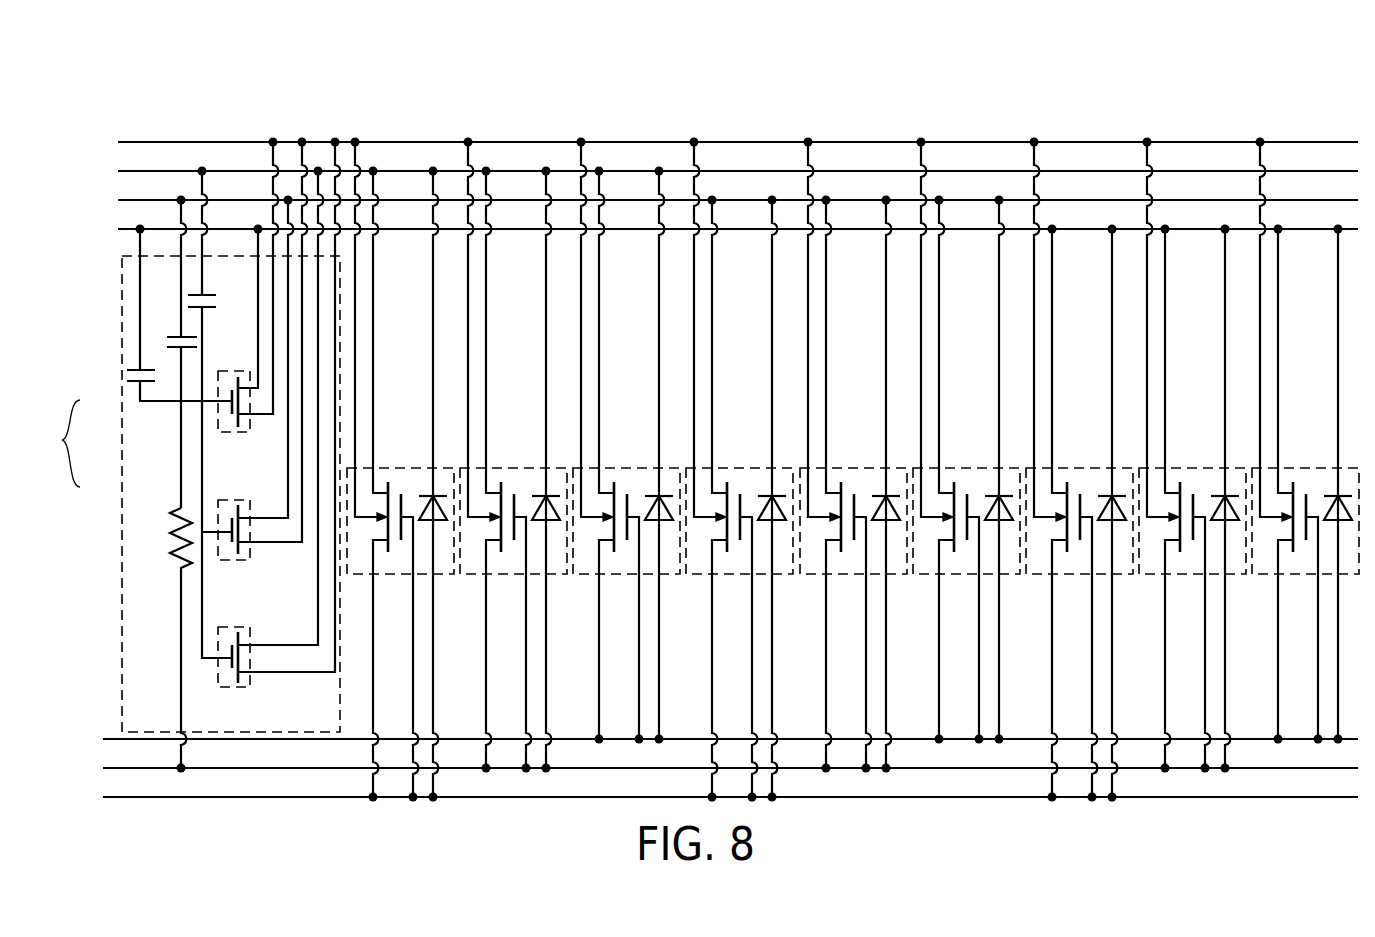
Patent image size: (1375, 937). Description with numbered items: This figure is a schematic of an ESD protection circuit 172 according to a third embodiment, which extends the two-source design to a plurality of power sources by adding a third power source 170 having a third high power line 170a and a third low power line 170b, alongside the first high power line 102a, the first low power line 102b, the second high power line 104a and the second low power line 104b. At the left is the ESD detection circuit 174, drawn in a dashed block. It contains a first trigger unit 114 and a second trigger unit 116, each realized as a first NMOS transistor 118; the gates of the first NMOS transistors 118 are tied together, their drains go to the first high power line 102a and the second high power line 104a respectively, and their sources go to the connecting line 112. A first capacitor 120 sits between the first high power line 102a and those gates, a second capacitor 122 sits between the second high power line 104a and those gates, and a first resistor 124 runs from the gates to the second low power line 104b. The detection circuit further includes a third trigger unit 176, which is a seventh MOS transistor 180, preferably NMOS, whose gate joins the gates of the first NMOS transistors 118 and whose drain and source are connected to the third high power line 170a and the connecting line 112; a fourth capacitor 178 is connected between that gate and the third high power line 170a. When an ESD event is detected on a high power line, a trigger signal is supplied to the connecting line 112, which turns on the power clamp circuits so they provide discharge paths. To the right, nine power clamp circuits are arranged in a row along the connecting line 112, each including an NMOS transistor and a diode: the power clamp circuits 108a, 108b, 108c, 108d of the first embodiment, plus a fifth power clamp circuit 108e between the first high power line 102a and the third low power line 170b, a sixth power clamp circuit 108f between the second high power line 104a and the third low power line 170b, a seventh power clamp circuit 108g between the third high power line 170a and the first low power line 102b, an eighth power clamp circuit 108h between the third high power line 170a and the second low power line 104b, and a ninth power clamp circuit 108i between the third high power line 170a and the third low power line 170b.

The connecting line 112 is at (147, 140).
The first high power line 102a is at (138, 170).
The first low power line 102b is at (130, 798).
The second high power line 104a is at (140, 199).
The second low power line 104b is at (130, 769).
The power clamp circuit 108a is at (415, 467).
The power clamp circuit 108b is at (513, 455).
The power clamp circuit 108c is at (739, 470).
The power clamp circuit 108d is at (853, 455).
The fifth power clamp circuit 108e is at (626, 441).
The sixth power clamp circuit 108f is at (966, 441).
The seventh power clamp circuit 108g is at (1079, 470).
The eighth power clamp circuit 108h is at (1192, 455).
The ninth power clamp circuit 108i is at (1305, 441).
The first trigger unit 114 is at (246, 627).
The second trigger unit 116 is at (244, 500).
The first NMOS transistor 118 is at (233, 560).
The first capacitor 120 is at (206, 306).
The second capacitor 122 is at (170, 340).
The first resistor 124 is at (170, 516).
The third power source 170 is at (62, 440).
The third high power line 170a is at (122, 232).
The third low power line 170b is at (116, 736).
The ESD protection circuit 172 is at (1099, 111).
The ESD detection circuit 174 is at (293, 733).
The third trigger unit 176 is at (246, 306).
The fourth capacitor 178 is at (126, 373).
The seventh MOS transistor 180 is at (233, 432).